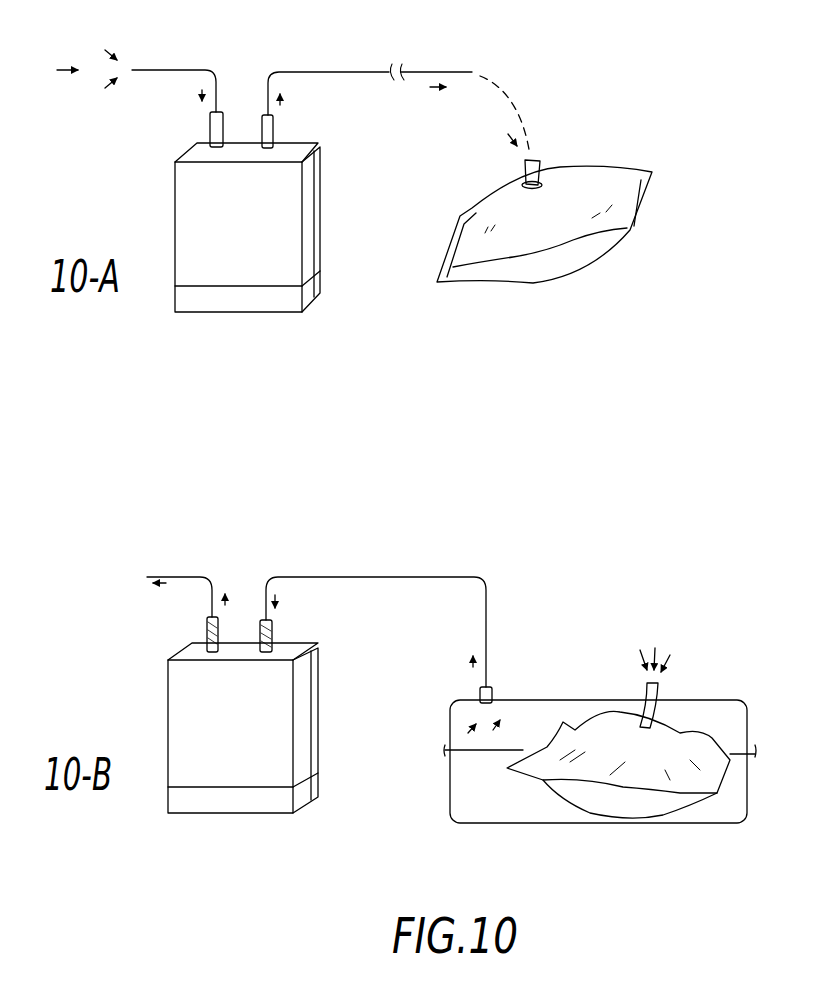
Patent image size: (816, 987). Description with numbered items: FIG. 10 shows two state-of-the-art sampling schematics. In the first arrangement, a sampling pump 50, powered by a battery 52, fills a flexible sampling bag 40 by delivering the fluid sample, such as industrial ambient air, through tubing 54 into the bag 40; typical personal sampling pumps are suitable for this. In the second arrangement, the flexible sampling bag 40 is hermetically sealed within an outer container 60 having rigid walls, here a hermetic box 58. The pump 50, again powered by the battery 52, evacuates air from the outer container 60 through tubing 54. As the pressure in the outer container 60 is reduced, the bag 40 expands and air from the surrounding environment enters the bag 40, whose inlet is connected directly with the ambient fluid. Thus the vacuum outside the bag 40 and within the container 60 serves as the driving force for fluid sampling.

The sampling bag 40 is at (595, 190).
The pump 50 is at (308, 228).
The battery 52 is at (305, 306).
The tubing 54 is at (368, 70).
The vacuum chamber 58 is at (523, 713).
The outer container 60 is at (540, 160).